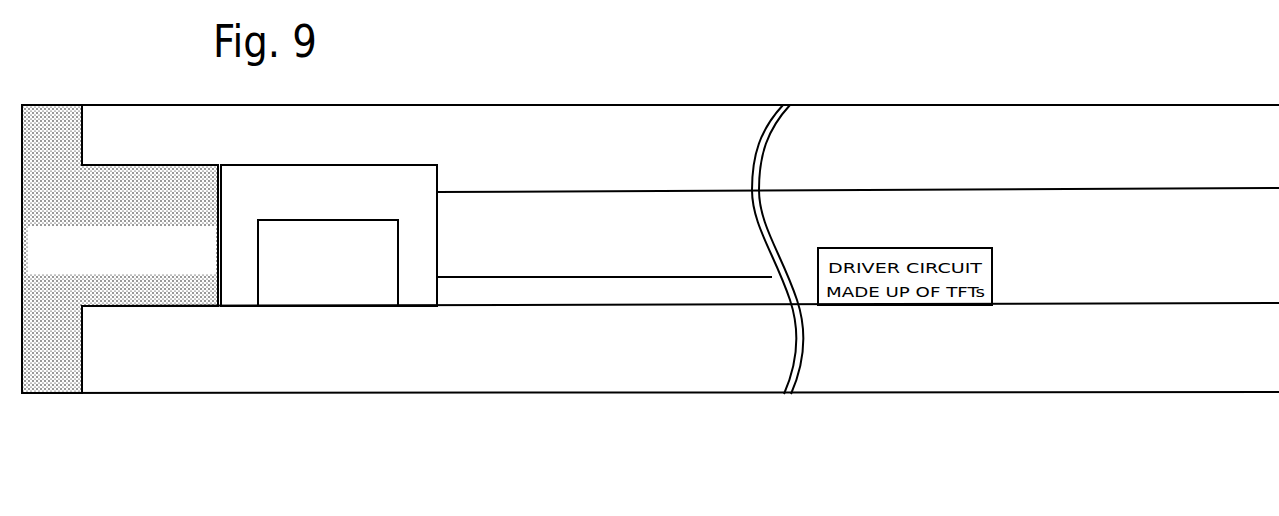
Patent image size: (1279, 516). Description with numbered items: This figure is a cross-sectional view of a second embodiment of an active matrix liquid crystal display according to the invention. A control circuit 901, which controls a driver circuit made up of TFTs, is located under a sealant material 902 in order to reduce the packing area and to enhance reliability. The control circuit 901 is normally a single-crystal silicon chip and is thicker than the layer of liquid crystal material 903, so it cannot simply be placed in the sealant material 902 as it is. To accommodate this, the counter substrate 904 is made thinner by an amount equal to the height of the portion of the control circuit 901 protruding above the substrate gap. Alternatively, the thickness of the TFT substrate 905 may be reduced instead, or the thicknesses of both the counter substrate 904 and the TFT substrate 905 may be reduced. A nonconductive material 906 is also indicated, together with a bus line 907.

The control circuit 901 is at (328, 263).
The sealant material 902 is at (329, 235).
The liquid crystal material 903 is at (537, 249).
The counter substrate 904 is at (650, 148).
The TFT substrate 905 is at (650, 348).
The nonconductive material 906 is at (120, 249).
The bus line 907 is at (604, 289).